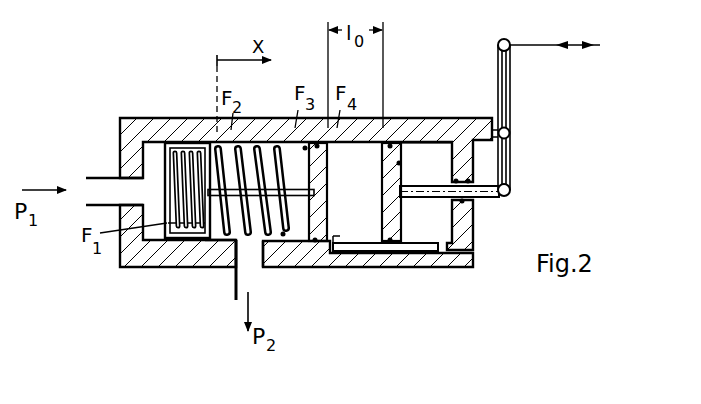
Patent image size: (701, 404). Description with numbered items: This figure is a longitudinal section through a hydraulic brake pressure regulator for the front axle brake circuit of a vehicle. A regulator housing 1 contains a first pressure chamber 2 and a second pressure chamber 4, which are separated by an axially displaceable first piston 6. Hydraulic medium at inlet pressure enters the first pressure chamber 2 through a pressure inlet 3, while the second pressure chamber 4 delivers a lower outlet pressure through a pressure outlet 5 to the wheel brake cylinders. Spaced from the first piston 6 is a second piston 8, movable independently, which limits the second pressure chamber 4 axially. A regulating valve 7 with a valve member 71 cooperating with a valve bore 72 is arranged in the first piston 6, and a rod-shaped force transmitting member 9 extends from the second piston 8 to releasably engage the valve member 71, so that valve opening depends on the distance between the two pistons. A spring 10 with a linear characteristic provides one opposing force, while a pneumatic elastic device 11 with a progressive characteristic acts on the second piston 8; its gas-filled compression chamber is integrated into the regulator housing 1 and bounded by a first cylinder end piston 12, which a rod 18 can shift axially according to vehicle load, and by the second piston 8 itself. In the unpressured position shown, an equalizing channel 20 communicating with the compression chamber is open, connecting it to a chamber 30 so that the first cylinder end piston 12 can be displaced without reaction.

The regulator housing 1 is at (141, 126).
The first pressure chamber 2 is at (136, 135).
The pressure inlet 3 is at (100, 182).
The second pressure chamber 4 is at (291, 226).
The pressure outlet 5 is at (250, 277).
The first piston 6 is at (186, 240).
The regulating valve 7 is at (173, 145).
The second piston 8 is at (333, 228).
The rod-shaped force transmitting member 9 is at (227, 270).
The spring 10 is at (211, 243).
The pneumatic elastic device 11 is at (360, 165).
The first cylinder end piston 12 is at (436, 152).
The rod 18 is at (505, 155).
The equalizing channel 20 is at (430, 255).
The chamber 30 is at (441, 130).
The valve member 71 is at (185, 147).
The valve bore 72 is at (216, 148).